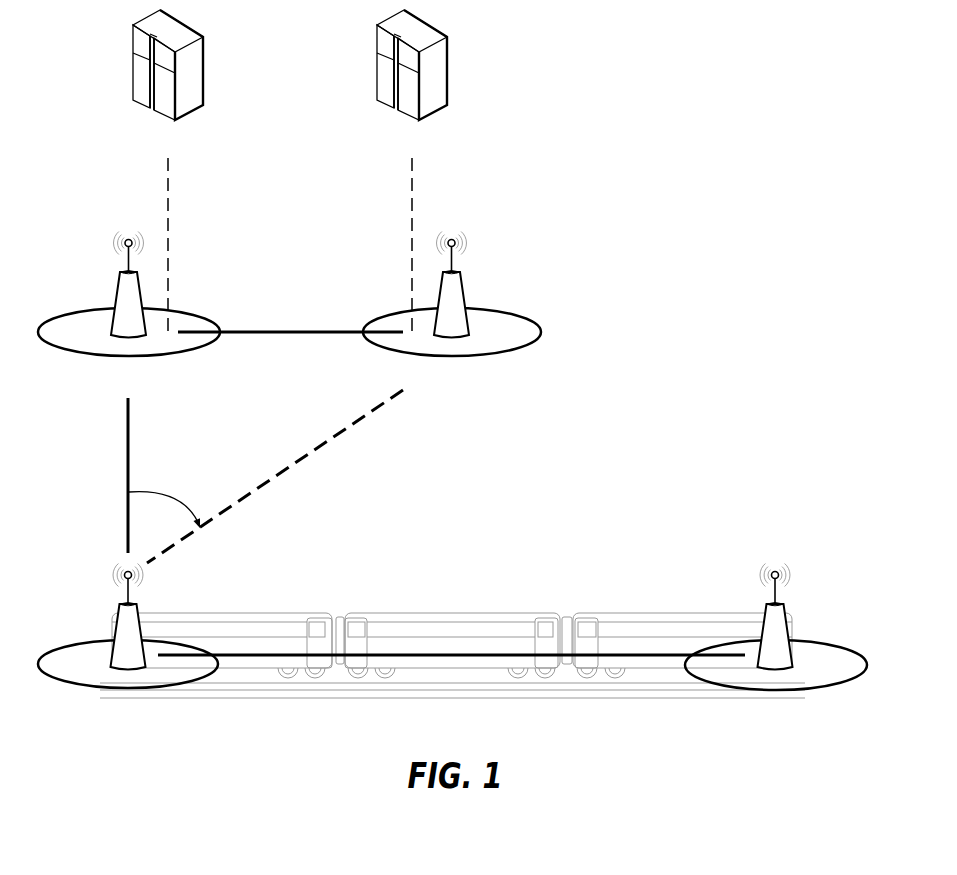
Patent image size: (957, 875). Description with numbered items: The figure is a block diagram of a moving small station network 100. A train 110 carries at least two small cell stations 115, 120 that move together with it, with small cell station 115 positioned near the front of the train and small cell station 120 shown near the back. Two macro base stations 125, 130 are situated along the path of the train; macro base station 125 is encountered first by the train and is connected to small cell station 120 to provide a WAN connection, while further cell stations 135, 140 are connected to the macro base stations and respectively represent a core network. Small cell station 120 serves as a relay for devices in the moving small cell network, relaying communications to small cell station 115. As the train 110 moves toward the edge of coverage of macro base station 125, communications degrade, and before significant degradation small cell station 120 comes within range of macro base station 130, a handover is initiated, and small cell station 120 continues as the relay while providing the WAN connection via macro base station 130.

The moving small station network 100 is at (725, 28).
The train 110 is at (452, 613).
The small cell station 115 is at (788, 627).
The small cell station 120 is at (115, 618).
The macro base station 125 is at (115, 288).
The macro base station 130 is at (467, 292).
The cell station 135 is at (133, 63).
The cell station 140 is at (377, 63).